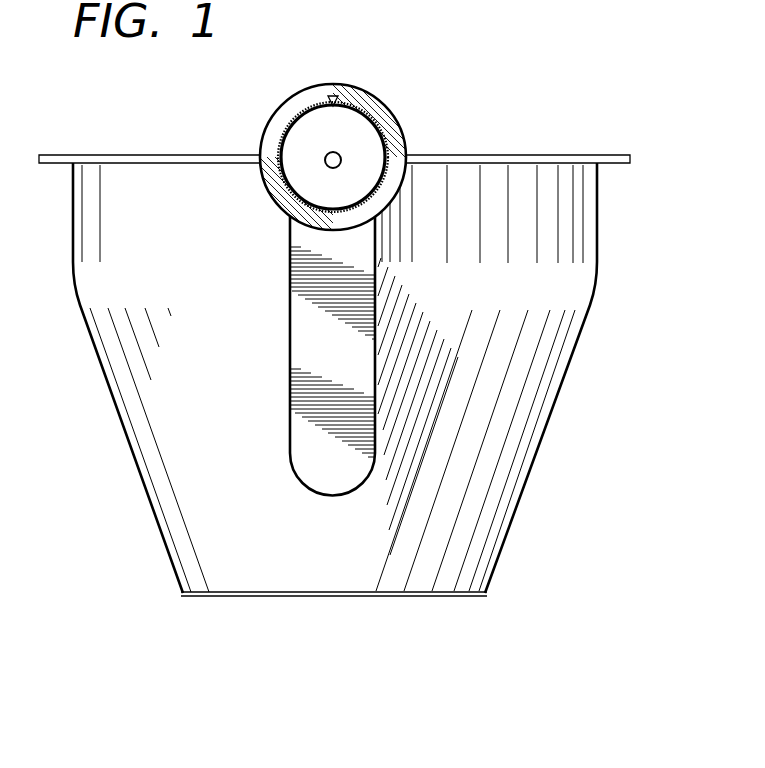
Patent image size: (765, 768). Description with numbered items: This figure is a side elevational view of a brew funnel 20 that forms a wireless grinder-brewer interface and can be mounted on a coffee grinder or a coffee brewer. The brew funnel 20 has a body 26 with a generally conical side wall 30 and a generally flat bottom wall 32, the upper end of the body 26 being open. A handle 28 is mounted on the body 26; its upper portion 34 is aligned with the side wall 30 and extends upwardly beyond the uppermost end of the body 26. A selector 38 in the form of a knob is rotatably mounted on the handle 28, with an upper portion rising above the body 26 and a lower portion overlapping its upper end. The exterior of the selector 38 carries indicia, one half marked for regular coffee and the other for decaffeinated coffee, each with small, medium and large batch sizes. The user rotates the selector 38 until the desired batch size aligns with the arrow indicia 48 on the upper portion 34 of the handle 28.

The brew funnel 20 is at (608, 257).
The body 26 is at (575, 370).
The handle 28 is at (289, 390).
The side wall 30 is at (512, 463).
The bottom wall 32 is at (217, 596).
The upper portion 34 is at (365, 88).
The selector 38 is at (383, 128).
The arrow indicia 48 is at (331, 96).